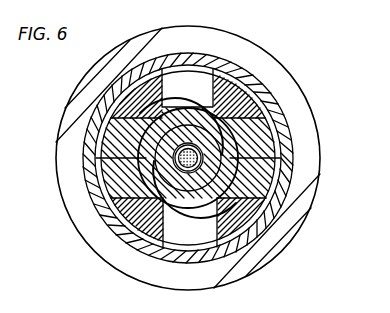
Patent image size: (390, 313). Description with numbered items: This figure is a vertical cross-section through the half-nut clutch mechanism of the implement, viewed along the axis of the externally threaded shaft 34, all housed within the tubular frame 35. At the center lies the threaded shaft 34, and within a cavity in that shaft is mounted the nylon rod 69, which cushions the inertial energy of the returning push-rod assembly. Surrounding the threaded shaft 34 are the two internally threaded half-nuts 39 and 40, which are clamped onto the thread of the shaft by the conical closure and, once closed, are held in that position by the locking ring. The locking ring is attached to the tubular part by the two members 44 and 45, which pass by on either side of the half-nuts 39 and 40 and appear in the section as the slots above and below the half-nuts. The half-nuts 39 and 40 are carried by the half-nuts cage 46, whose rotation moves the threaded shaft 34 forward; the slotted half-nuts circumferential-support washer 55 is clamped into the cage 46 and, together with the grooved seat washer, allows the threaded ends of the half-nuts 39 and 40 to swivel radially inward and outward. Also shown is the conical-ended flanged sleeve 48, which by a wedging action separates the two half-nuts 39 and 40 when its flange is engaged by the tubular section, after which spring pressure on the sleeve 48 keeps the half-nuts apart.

The externally threaded shaft 34 is at (100, 192).
The tubular frame 35 is at (283, 226).
The half-nut 39 is at (150, 152).
The half-nut 40 is at (268, 183).
The member 44 is at (200, 92).
The member 45 is at (200, 228).
The half-nuts cage 46 is at (276, 70).
The conical-ended flanged sleeve 48 is at (135, 150).
The slotted half-nuts circumferential-support washer 55 is at (118, 226).
The nylon rod 69 is at (284, 158).